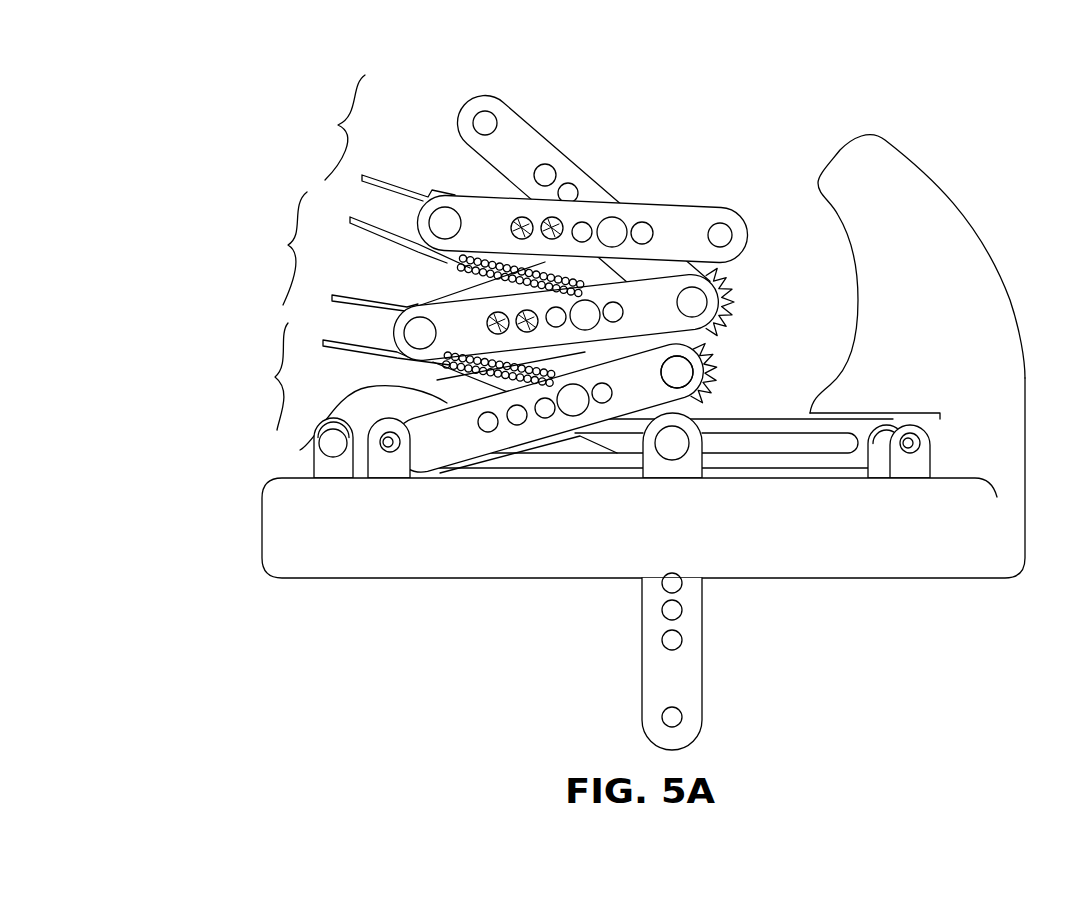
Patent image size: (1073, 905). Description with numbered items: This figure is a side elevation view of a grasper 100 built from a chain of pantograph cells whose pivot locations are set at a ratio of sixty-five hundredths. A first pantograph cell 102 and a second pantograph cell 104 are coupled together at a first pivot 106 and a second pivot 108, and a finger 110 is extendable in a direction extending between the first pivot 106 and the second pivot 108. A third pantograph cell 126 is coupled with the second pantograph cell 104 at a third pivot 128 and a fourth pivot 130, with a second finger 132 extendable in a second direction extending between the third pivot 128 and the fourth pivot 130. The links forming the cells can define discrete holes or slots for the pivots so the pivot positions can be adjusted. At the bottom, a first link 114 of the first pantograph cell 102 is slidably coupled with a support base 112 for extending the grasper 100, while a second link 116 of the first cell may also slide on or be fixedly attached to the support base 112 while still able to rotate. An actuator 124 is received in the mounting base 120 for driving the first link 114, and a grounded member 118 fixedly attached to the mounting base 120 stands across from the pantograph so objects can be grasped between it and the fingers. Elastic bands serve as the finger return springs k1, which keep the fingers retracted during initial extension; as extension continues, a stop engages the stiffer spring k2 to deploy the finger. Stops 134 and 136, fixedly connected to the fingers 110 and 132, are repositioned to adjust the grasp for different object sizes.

The grasper 100 is at (728, 108).
The first pantograph cell 102 is at (256, 376).
The second pantograph cell 104 is at (341, 278).
The first pivot 106 is at (403, 308).
The second pivot 108 is at (677, 372).
The finger 110 is at (677, 372).
The support base 112 is at (465, 460).
The first link 114 is at (585, 353).
The second link 116 is at (300, 450).
The grounded member 118 is at (923, 171).
The mounting base 120 is at (893, 577).
The actuator 124 is at (703, 690).
The third pantograph cell 126 is at (377, 171).
The third pivot 128 is at (447, 225).
The fourth pivot 130 is at (695, 305).
The second finger 132 is at (728, 268).
The stop 134 is at (575, 437).
The stop 136 is at (650, 272).
The return spring k1 is at (722, 360).
The second spring k2 is at (447, 378).